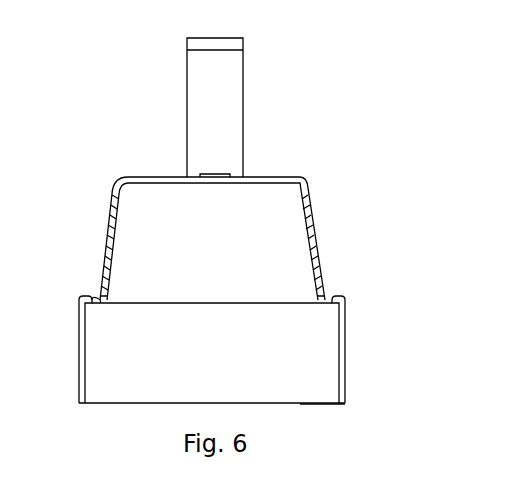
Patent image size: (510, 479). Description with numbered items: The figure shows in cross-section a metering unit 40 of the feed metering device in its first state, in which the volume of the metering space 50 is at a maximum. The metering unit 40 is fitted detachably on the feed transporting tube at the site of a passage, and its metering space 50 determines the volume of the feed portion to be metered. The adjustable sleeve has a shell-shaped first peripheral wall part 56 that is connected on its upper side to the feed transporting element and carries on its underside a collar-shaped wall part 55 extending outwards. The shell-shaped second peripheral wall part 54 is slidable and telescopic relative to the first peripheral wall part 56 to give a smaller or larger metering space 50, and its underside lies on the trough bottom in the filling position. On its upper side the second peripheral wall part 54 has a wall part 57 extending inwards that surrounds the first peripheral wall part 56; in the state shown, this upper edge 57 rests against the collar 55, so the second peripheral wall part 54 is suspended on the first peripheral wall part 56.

The metering unit 40 is at (290, 86).
The metering space 50 is at (288, 418).
The second peripheral wall part 54 is at (77, 359).
The collar-shaped wall part 55 is at (100, 304).
The first peripheral wall part 56 is at (321, 216).
The inwardly extending wall part 57 is at (92, 298).